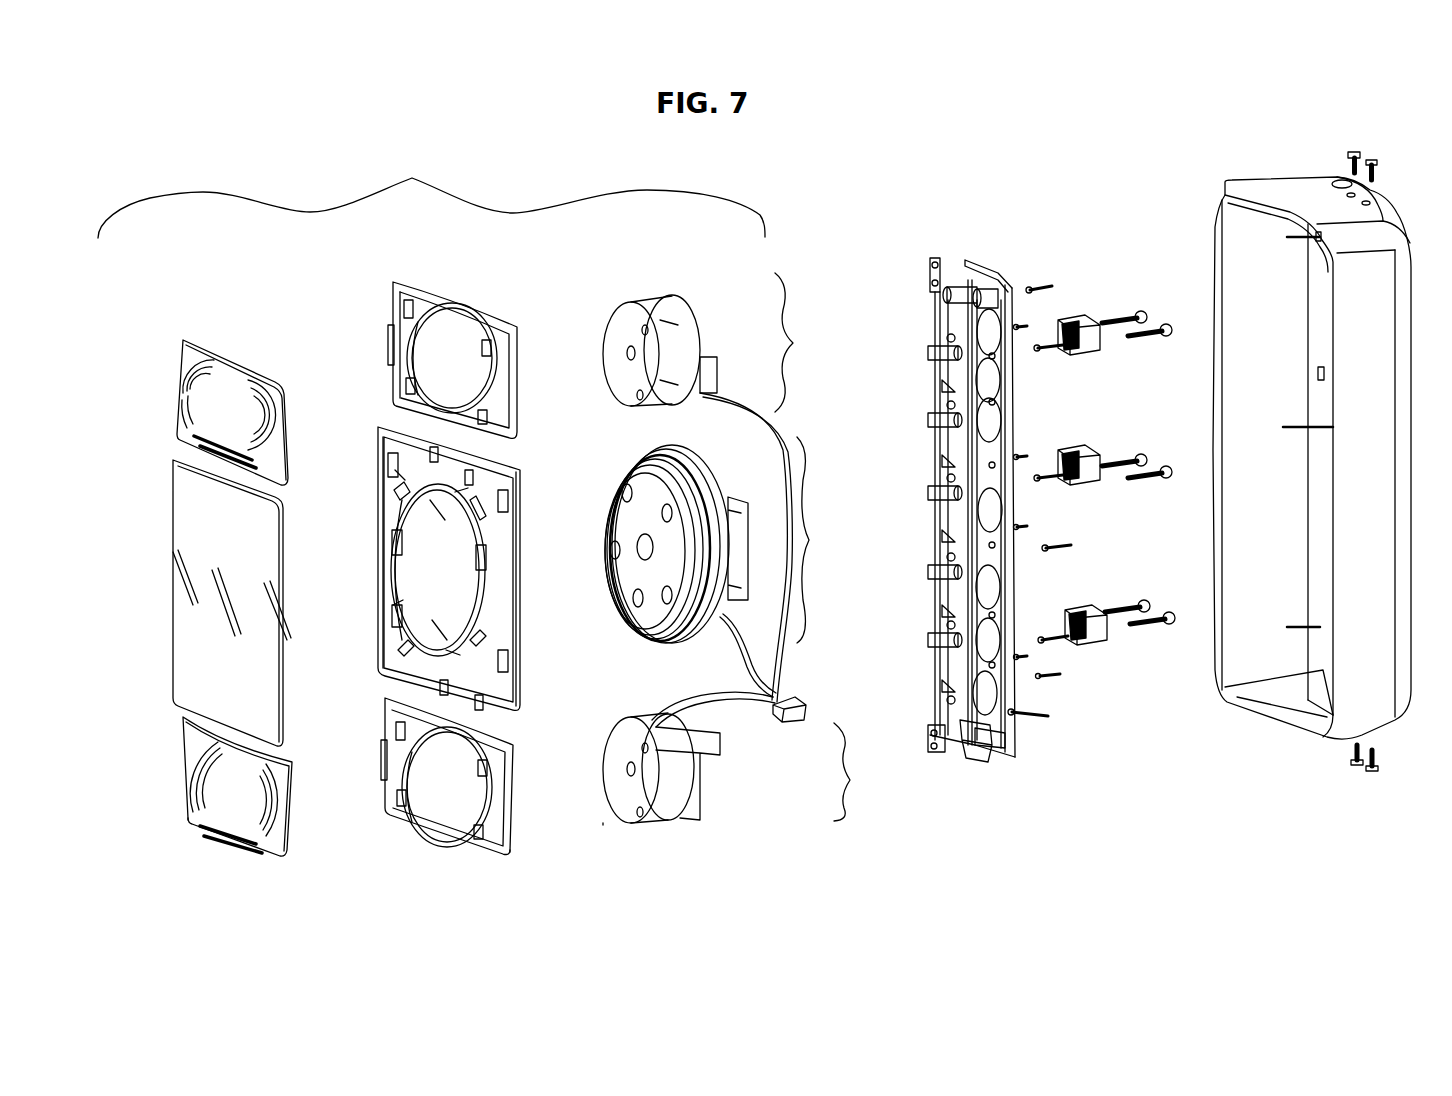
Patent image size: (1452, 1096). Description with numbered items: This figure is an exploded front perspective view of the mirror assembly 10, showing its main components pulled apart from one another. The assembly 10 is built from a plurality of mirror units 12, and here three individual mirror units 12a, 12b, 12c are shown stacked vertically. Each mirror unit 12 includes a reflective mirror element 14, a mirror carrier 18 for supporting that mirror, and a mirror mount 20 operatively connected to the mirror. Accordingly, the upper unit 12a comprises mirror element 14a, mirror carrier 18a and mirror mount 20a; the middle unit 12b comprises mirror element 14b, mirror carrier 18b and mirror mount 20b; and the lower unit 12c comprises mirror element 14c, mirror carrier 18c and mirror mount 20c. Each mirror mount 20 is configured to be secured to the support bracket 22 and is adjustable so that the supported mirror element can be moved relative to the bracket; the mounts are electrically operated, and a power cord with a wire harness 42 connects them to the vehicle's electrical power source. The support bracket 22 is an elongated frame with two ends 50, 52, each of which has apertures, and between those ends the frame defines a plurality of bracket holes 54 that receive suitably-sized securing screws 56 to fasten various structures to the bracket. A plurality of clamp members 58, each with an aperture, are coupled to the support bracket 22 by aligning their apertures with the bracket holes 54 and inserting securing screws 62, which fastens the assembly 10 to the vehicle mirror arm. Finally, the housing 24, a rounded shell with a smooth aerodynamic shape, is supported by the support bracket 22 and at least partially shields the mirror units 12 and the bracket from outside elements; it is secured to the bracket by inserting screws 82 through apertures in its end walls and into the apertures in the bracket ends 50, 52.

The assembly 10 is at (146, 88).
The mirror units 12 is at (431, 192).
The mirror unit 12a is at (814, 342).
The mirror unit 12b is at (834, 540).
The mirror unit 12c is at (868, 772).
The reflective mirror elements 14 is at (229, 854).
The mirror element 14a is at (180, 383).
The mirror element 14b is at (186, 660).
The mirror element 14c is at (184, 772).
The mirror carrier 18 is at (433, 848).
The mirror carrier 18a is at (393, 335).
The mirror carrier 18b is at (384, 510).
The mirror carrier 18c is at (388, 747).
The mirror mount 20 is at (649, 825).
The mirror mount 20a is at (622, 335).
The mirror mount 20b is at (622, 512).
The mirror mount 20c is at (622, 748).
The support bracket 22 is at (930, 260).
The housing 24 is at (1230, 278).
The wire harness 42 is at (788, 718).
The end 50 is at (978, 262).
The end 52 is at (985, 758).
The bracket holes 54 is at (966, 758).
The securing screws 56 is at (1050, 717).
The clamp members 58 is at (1100, 640).
The securing screws 62 is at (1120, 313).
The screws 82 is at (1347, 160).